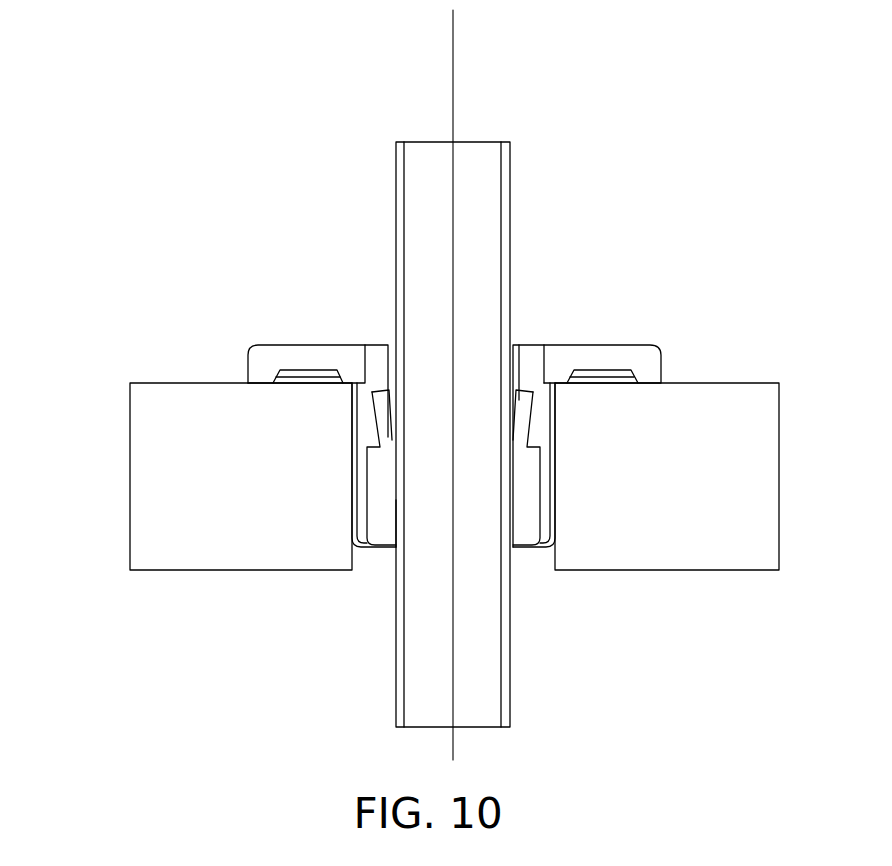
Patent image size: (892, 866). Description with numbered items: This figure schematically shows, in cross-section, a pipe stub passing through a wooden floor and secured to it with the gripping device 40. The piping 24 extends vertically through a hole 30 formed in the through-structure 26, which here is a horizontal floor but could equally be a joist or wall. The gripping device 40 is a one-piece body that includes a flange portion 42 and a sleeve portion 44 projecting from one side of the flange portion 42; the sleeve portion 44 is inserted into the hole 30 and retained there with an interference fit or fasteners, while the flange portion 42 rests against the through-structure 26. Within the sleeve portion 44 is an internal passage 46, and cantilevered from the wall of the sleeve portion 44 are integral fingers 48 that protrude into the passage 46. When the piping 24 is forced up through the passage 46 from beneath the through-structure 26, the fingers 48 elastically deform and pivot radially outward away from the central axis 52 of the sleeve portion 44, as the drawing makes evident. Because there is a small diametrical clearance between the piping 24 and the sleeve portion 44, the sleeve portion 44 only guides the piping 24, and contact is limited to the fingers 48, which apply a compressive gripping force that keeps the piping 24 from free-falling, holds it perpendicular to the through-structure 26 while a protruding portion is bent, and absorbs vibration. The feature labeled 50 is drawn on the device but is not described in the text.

The piping 24 is at (509, 195).
The through-structure 26 is at (152, 475).
The hole 30 is at (352, 557).
The gripping device 40 is at (612, 346).
The flange portion 42 is at (270, 355).
The sleeve portion 44 is at (542, 426).
The internal passage 46 is at (397, 525).
The fingers 48 is at (382, 417).
The protrusion 50 is at (320, 345).
The axis 52 is at (453, 63).